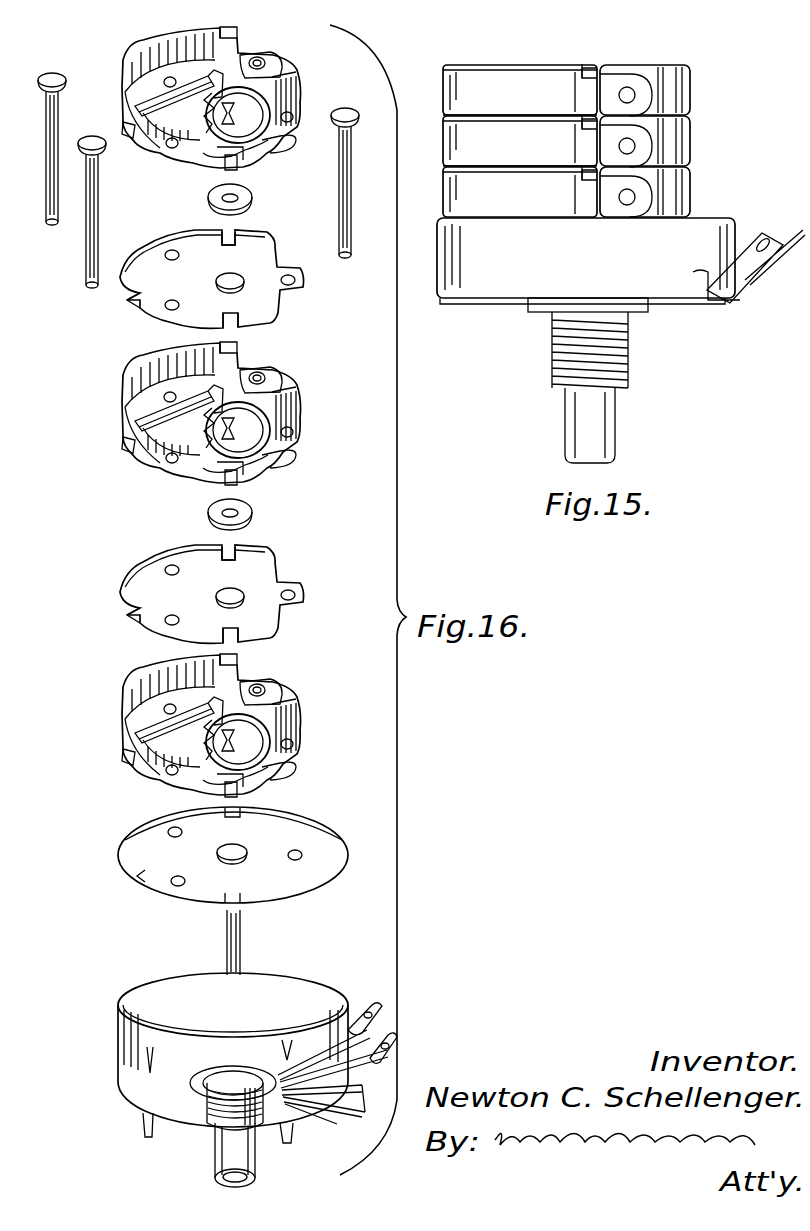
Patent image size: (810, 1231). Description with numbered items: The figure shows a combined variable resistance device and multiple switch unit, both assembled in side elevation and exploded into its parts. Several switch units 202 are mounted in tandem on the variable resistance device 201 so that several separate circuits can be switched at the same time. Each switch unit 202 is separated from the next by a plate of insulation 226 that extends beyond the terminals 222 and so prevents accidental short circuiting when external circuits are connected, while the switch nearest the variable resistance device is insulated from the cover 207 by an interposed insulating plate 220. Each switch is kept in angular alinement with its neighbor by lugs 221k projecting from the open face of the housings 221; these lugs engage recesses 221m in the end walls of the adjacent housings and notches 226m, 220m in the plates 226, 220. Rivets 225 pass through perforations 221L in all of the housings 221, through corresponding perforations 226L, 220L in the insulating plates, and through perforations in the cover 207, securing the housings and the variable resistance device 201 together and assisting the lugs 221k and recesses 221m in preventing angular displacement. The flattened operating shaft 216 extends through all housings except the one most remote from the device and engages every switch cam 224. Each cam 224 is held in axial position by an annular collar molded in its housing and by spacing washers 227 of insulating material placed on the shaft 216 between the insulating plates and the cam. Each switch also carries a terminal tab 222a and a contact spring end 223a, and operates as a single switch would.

In FIG. 16, the variable resistance device 201 is at (257, 1068).
In FIG. 15, the variable resistance device 201 is at (621, 315).
In FIG. 15, the switch unit 202 is at (601, 138).
In FIG. 16, the cover 207 is at (172, 990).
In FIG. 15, the cover 207 is at (715, 243).
In FIG. 16, the operating shaft 216 is at (241, 943).
In FIG. 16, the insulating plate 220 is at (335, 860).
In FIG. 15, the insulating plate 220 is at (735, 225).
In FIG. 16, the perforations 220L is at (168, 832).
In FIG. 16, the notches 220m is at (230, 812).
In FIG. 16, the housing 221 is at (302, 90).
In FIG. 16, the lugs 221k is at (258, 56).
In FIG. 15, the lugs 221k is at (584, 116).
In FIG. 16, the perforations 221L is at (165, 84).
In FIG. 16, the recesses 221m is at (237, 30).
In FIG. 15, the recesses 221m is at (600, 68).
In FIG. 15, the terminals 222 is at (655, 92).
In FIG. 16, the terminal tab 222a is at (280, 64).
In FIG. 16, the contact spring end 223a is at (268, 147).
In FIG. 16, the switch cam 224 is at (253, 100).
In FIG. 16, the rivets 225 is at (352, 146).
In FIG. 16, the plate of insulation 226 is at (265, 315).
In FIG. 15, the plate of insulation 226 is at (443, 116).
In FIG. 16, the perforations 226L is at (172, 250).
In FIG. 16, the notches 226m is at (232, 238).
In FIG. 16, the spacing washers 227 is at (189, 201).